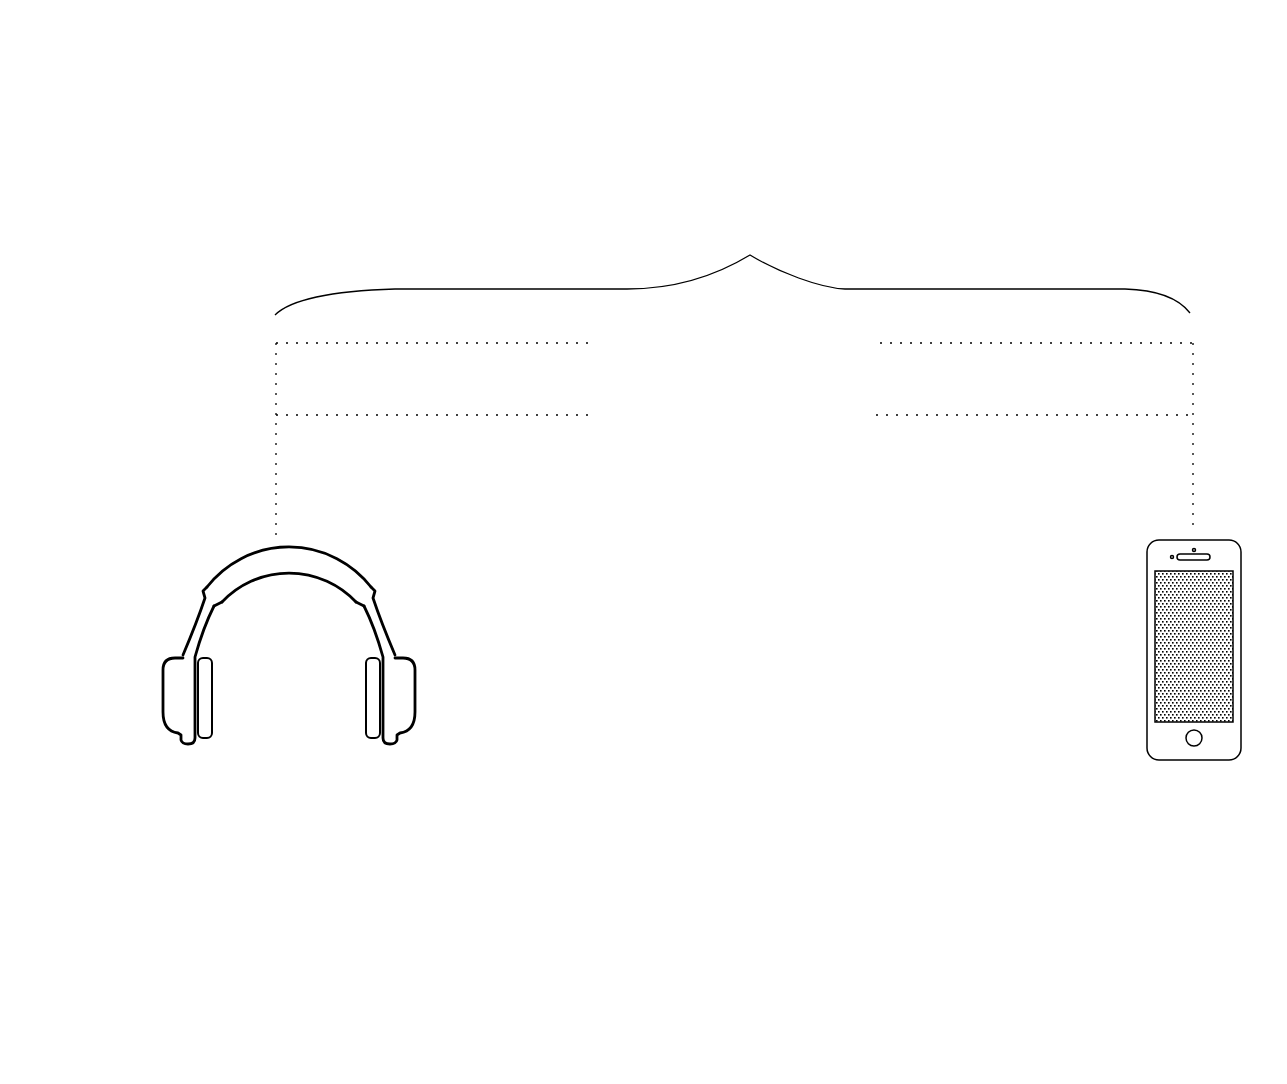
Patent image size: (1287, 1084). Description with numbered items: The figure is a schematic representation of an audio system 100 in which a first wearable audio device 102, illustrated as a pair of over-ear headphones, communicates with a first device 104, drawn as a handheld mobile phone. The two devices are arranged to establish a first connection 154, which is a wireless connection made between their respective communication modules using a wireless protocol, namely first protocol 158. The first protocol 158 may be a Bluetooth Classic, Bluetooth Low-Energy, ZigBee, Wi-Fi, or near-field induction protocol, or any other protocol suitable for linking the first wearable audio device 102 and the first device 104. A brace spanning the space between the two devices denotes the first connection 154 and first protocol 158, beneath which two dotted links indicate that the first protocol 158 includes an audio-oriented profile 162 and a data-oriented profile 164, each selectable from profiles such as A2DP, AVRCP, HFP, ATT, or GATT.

The audio system 100 is at (977, 128).
The first wearable audio device 102 is at (413, 666).
The first device 104 is at (1147, 622).
The first connection 154 is at (734, 376).
The first protocol 158 is at (734, 376).
The audio-oriented profile 162 is at (878, 354).
The data-oriented profile 164 is at (873, 427).